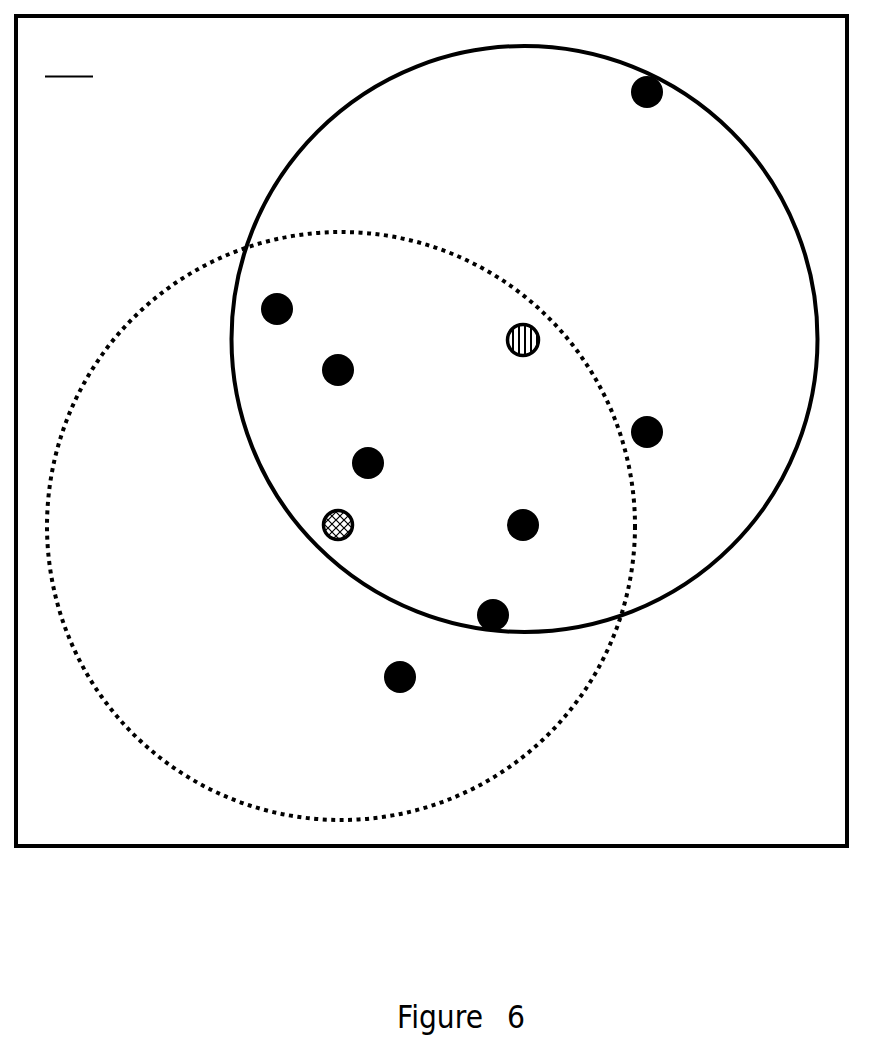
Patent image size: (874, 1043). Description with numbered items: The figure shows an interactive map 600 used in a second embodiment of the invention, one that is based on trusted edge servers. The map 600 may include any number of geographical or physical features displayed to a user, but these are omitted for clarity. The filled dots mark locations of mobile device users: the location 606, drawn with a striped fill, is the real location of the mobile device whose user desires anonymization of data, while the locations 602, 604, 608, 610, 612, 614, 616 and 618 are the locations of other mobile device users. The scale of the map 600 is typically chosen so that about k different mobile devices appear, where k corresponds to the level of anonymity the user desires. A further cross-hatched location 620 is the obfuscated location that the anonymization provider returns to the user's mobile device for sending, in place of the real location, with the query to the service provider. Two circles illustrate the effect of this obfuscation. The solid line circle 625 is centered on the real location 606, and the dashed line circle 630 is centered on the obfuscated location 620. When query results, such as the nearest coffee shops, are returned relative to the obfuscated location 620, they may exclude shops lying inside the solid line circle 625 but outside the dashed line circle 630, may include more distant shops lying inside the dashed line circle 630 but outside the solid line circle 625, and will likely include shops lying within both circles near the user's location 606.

The interactive map 600 is at (172, 79).
The location 602 is at (620, 100).
The location 604 is at (249, 309).
The location 606 is at (496, 340).
The location 608 is at (311, 371).
The location 610 is at (617, 433).
The location 612 is at (336, 463).
The location 614 is at (494, 525).
The location 616 is at (462, 616).
The location 618 is at (369, 677).
The obfuscated location 620 is at (307, 525).
The solid line circle 625 is at (674, 602).
The dashed line circle 630 is at (190, 788).